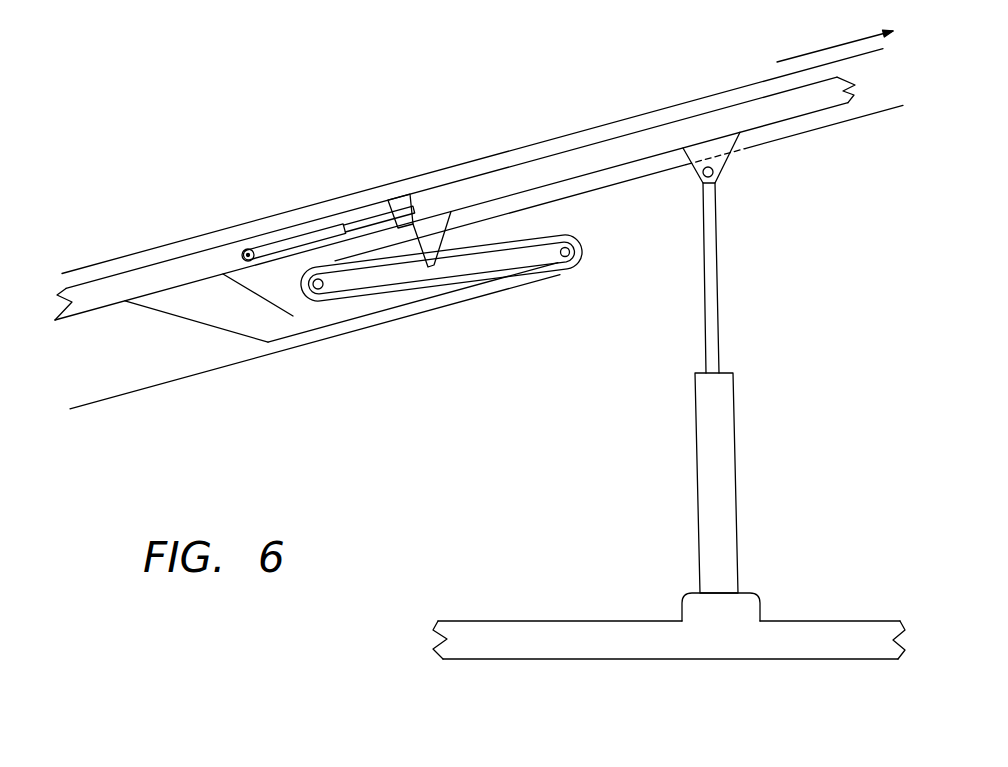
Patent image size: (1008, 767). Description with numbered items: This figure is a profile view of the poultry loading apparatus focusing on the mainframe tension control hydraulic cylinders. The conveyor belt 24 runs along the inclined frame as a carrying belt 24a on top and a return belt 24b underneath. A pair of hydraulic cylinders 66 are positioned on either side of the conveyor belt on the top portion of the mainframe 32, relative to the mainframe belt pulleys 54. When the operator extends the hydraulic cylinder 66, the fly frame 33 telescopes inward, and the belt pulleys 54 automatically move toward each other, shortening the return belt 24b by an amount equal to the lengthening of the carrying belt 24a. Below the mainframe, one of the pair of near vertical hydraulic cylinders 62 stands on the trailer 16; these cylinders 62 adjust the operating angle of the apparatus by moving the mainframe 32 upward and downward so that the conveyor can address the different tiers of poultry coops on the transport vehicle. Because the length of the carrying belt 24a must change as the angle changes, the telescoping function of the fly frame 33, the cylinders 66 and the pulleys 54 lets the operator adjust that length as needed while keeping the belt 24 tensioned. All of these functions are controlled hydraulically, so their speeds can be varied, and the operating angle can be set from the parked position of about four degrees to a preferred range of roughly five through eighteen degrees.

The trailer 16 is at (557, 621).
The conveyor belt 24 is at (190, 238).
The carrying belt 24a is at (715, 87).
The return belt 24b is at (810, 130).
The mainframe 32 is at (120, 291).
The fly frame 33 is at (513, 166).
The mainframe belt pulleys 54 is at (320, 302).
The hydraulic cylinders 62 is at (736, 432).
The hydraulic cylinders 66 is at (285, 238).